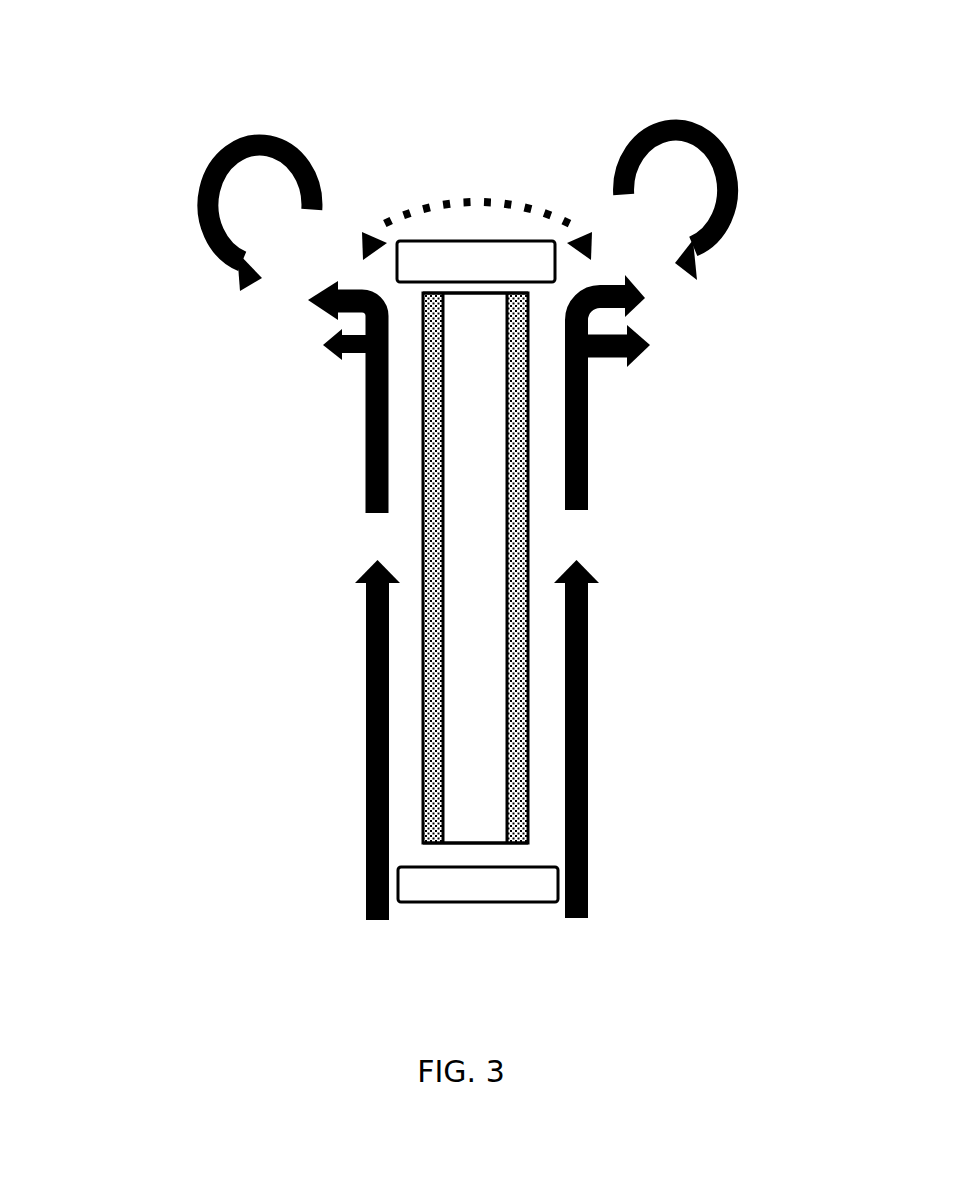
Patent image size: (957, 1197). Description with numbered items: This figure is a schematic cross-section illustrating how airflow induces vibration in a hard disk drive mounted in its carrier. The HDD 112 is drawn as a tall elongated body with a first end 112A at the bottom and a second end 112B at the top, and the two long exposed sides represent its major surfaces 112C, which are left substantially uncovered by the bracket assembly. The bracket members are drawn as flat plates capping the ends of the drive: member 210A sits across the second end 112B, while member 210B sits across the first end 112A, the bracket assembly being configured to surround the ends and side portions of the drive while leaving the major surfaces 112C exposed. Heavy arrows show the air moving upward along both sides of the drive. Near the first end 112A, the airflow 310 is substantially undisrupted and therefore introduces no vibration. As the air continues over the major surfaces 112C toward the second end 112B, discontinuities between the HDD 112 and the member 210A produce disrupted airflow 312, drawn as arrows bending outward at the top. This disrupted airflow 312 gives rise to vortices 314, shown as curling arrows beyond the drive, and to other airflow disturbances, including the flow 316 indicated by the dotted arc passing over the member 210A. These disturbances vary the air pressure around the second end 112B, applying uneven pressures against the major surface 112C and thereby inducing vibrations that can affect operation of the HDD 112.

The HDD 112 is at (490, 553).
The first end of the HDD 112A is at (470, 840).
The second end of the HDD 112B is at (463, 282).
The major surface of the HDD 112C is at (418, 537).
The member of the bracket assembly 210A is at (513, 241).
The member of the bracket assembly 210B is at (488, 906).
The airflow 310 is at (363, 713).
The disrupted airflow 312 is at (352, 388).
The vortices 314 is at (195, 214).
The flow over upper end 316 is at (383, 212).